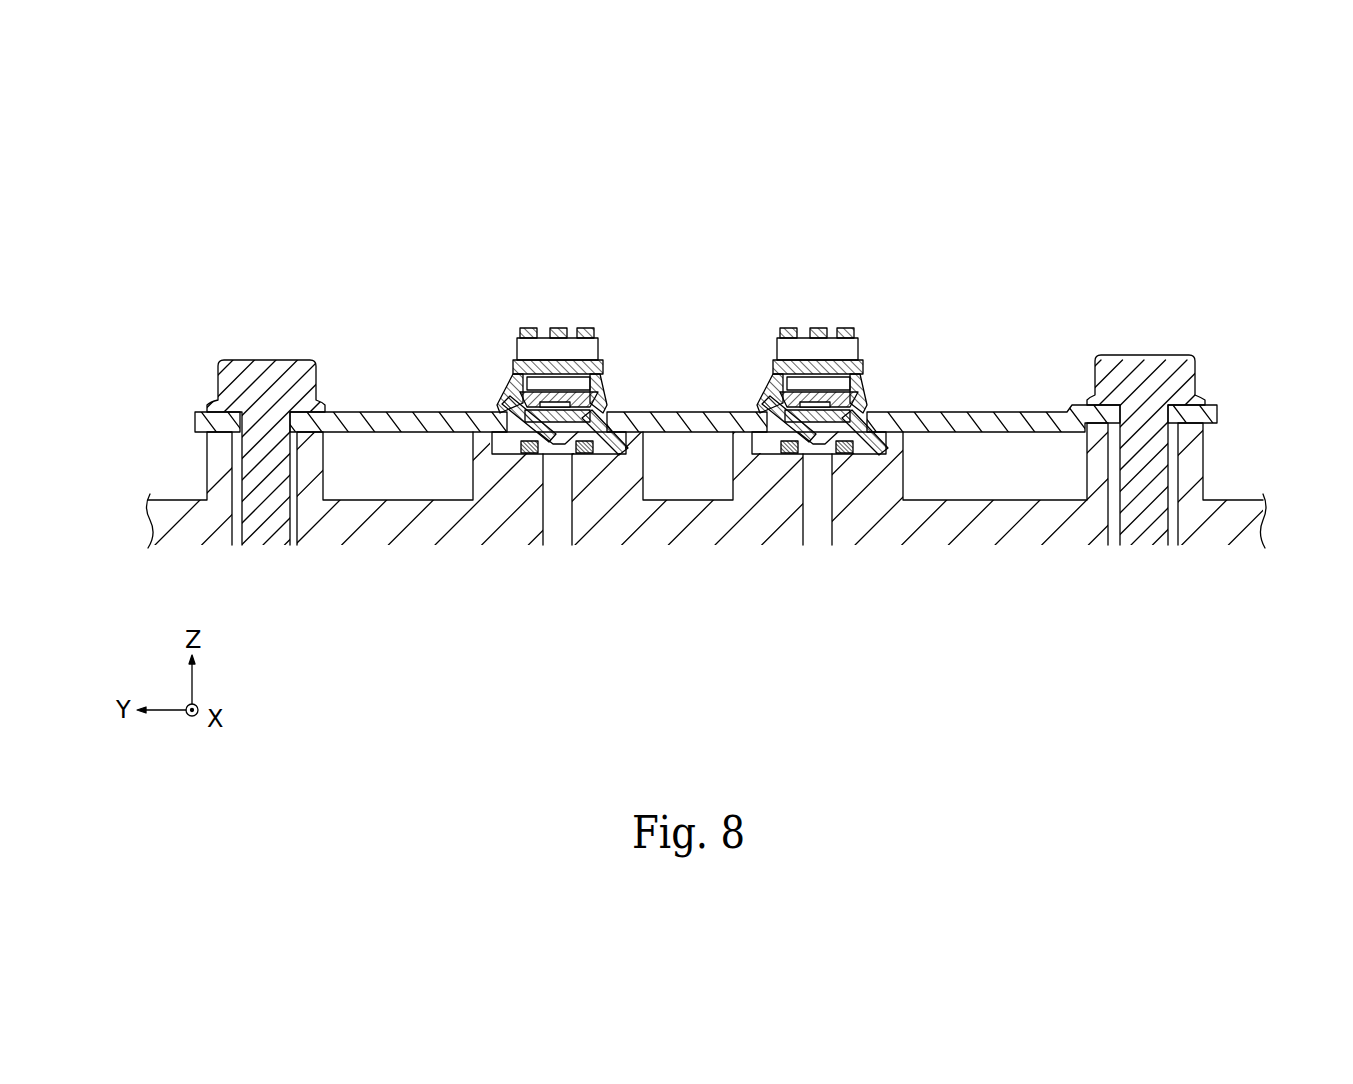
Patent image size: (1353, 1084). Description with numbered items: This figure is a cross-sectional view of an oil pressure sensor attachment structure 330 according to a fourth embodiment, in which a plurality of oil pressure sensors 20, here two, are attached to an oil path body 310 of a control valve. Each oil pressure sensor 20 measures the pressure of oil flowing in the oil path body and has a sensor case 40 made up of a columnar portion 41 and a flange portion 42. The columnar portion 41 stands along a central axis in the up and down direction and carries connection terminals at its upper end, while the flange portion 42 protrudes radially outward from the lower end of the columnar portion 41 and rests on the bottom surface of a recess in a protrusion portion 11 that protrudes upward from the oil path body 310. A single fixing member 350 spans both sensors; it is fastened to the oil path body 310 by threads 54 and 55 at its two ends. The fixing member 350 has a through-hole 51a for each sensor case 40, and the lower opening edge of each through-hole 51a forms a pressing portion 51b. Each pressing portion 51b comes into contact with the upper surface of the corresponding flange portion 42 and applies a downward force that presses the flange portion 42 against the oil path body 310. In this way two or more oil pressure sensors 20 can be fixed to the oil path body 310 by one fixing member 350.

The oil pressure sensor attachment structure 330 is at (690, 373).
The oil path body 310 is at (750, 509).
The protrusion portion 11 is at (626, 469).
The oil pressure sensor 20 is at (722, 425).
The sensor case 40 is at (754, 386).
The columnar portion 41 is at (609, 366).
The flange portion 42 is at (613, 437).
The through-hole 51a is at (518, 403).
The pressing portion 51b is at (503, 443).
The thread 54 is at (272, 372).
The thread 55 is at (1148, 378).
The fixing member 350 is at (1014, 408).